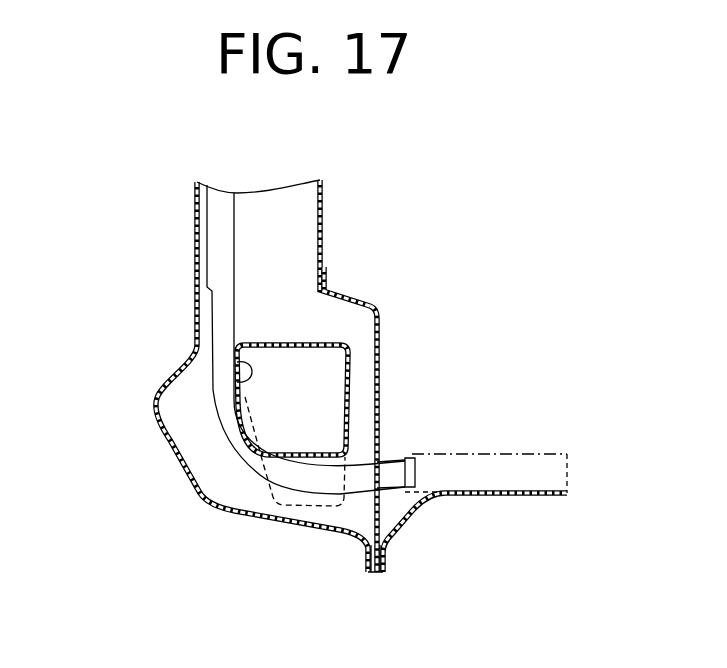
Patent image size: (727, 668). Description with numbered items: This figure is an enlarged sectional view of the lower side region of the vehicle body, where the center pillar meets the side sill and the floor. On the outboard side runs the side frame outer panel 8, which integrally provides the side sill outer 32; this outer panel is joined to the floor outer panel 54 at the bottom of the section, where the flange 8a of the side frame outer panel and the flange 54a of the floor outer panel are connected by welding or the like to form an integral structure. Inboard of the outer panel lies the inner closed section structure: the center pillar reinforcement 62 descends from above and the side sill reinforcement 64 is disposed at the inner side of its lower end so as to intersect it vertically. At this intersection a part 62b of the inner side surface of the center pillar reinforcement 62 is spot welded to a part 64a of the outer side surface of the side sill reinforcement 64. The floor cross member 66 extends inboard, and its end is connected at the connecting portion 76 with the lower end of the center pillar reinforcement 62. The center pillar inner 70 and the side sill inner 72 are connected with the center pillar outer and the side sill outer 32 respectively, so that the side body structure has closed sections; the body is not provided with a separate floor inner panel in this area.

The side frame outer panel 8 is at (200, 377).
The side sill outer 32 is at (202, 297).
The center pillar reinforcement 62 is at (222, 250).
The part of the inner side surface of the center pillar reinforcement 62b is at (238, 418).
The side sill reinforcement 64 is at (313, 343).
The part of the outer side surface of the side sill reinforcement 64a is at (237, 382).
The floor cross member 66 is at (530, 465).
The center pillar inner 70 is at (323, 213).
The side sill inner 72 is at (378, 365).
The connecting portion 76 is at (413, 455).
The floor outer panel 54 is at (417, 520).
The flange of the floor outer panel 54a is at (385, 558).
The flange of the side frame outer panel 8a is at (368, 558).